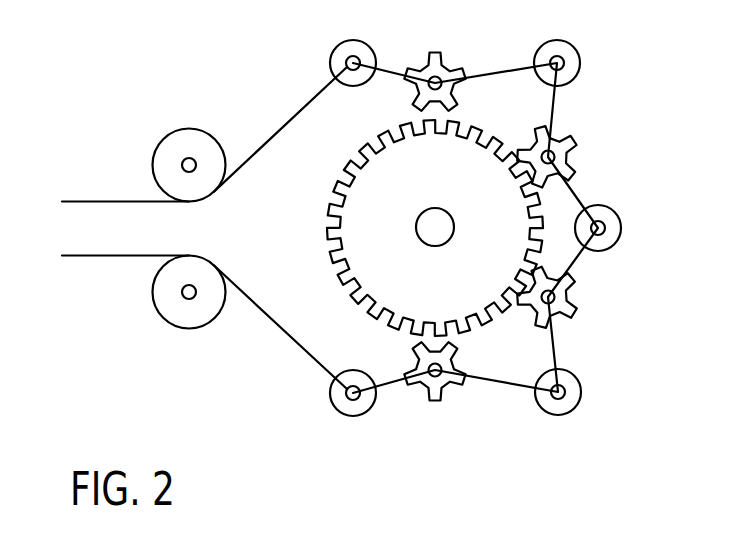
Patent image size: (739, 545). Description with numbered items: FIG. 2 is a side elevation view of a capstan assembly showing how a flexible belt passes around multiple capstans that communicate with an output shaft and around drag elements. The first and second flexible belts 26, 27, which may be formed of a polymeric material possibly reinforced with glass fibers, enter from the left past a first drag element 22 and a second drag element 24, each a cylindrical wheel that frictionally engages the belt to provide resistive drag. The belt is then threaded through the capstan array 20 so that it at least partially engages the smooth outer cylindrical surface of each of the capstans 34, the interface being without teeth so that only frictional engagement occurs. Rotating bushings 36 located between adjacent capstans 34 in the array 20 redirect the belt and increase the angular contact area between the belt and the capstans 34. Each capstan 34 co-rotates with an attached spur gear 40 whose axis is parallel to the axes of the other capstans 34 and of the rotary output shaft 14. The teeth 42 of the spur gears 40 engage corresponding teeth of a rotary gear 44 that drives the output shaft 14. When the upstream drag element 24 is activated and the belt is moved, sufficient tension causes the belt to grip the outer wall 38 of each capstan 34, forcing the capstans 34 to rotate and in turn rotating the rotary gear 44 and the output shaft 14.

The rotary output shaft 14 is at (443, 217).
The capstan array 20 is at (590, 120).
The first drag element 22 is at (190, 142).
The second drag element 24 is at (177, 322).
The first flexible belt 26 is at (198, 228).
The second flexible belt 27 is at (204, 323).
The capstan 34 is at (491, 232).
The rotating bushing 36 is at (340, 53).
The outer wall 38 is at (447, 355).
The spur gear 40 is at (432, 371).
The gear teeth 42 is at (350, 302).
The rotary gear 44 is at (416, 228).